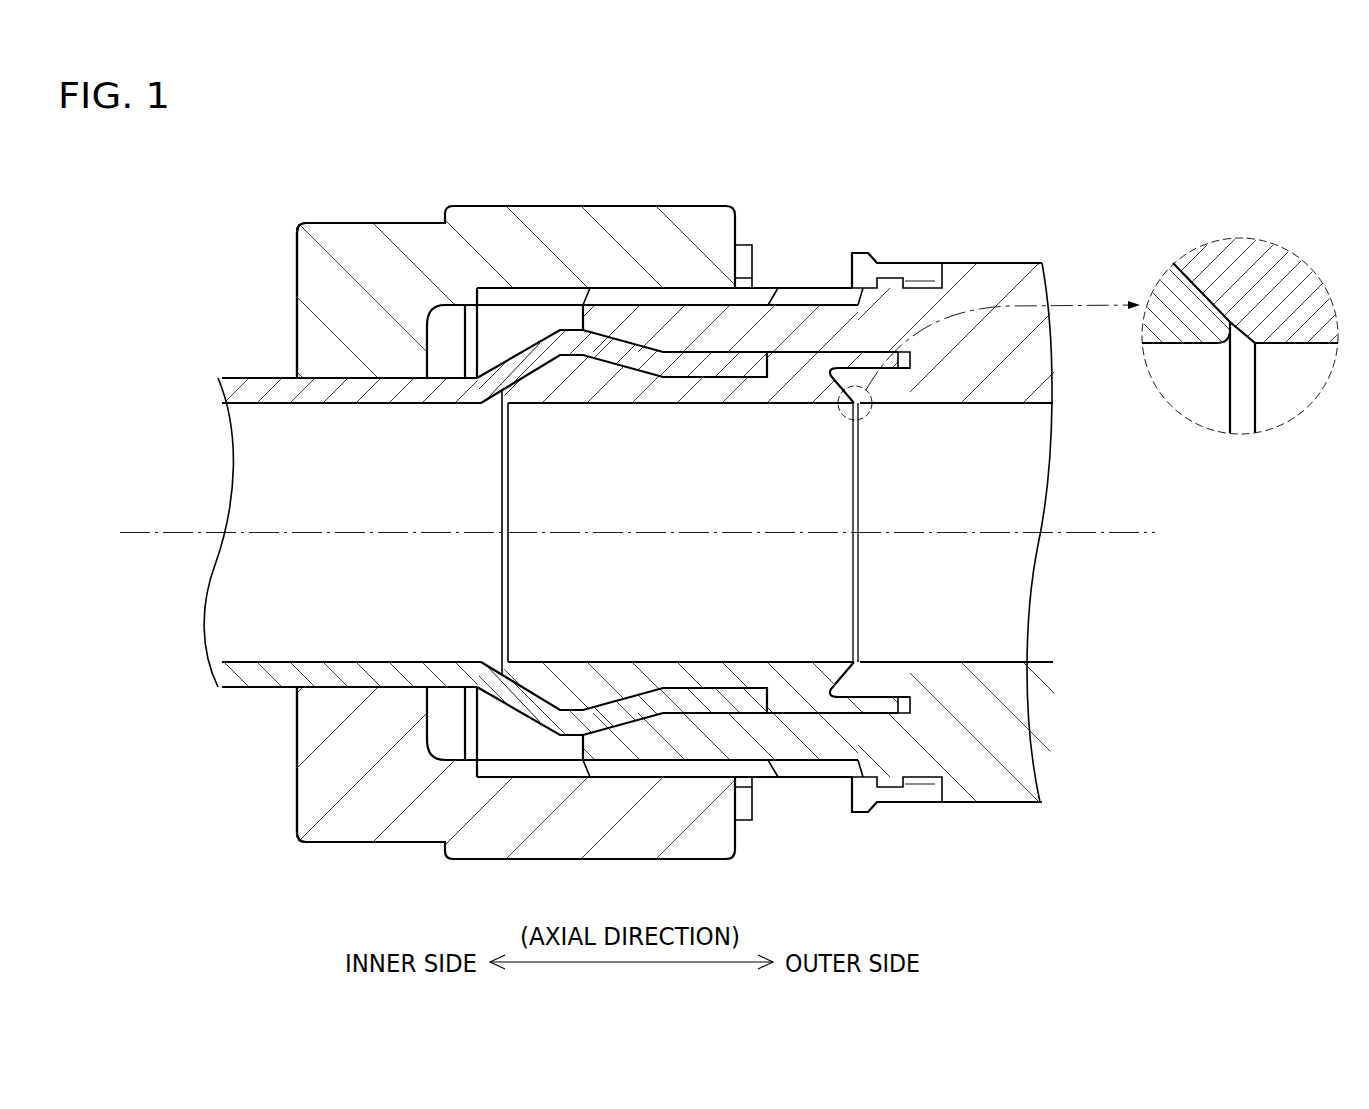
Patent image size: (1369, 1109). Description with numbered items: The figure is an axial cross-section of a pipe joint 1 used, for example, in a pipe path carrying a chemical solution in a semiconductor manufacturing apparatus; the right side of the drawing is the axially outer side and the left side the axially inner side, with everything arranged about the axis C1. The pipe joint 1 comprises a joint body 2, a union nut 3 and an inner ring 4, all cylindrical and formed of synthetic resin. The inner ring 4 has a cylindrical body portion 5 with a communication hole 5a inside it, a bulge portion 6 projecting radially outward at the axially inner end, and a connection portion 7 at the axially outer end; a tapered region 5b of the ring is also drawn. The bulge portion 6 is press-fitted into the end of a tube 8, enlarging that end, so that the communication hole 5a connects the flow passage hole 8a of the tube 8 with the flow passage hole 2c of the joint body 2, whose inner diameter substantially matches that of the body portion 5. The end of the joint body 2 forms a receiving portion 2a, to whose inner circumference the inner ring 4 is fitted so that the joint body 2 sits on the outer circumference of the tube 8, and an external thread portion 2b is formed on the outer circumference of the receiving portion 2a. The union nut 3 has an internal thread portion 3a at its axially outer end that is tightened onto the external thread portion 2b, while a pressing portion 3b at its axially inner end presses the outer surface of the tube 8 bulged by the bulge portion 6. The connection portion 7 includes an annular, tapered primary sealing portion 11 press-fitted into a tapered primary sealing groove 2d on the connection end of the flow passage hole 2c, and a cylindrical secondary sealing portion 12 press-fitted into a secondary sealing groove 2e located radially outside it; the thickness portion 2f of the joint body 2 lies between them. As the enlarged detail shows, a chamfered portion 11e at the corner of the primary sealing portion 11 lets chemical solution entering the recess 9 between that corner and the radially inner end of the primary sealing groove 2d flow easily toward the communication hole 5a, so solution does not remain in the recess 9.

The pipe joint 1 is at (263, 172).
The joint body 2 is at (1020, 262).
The receiving portion 2a is at (760, 330).
The external thread portion 2b is at (822, 293).
The flow passage hole 2c is at (967, 518).
The primary sealing groove 2d is at (837, 393).
The secondary sealing groove 2e is at (902, 371).
The thickness portion 2f is at (848, 376).
The union nut 3 is at (490, 206).
The internal thread portion 3a is at (535, 300).
The pressing portion 3b is at (320, 352).
The inner ring 4 is at (658, 661).
The body portion 5 is at (722, 676).
The communication hole 5a is at (699, 518).
The tapered portion 5b is at (586, 661).
The bulge portion 6 is at (568, 685).
The connection portion 7 is at (940, 555).
The tube 8 is at (252, 690).
The flow passage hole 8a is at (375, 518).
The recess 9 is at (1240, 350).
The primary sealing portion 11 is at (846, 661).
The chamfered portion 11e is at (1230, 350).
The secondary sealing portion 12 is at (878, 705).
The axis C1 is at (1108, 540).